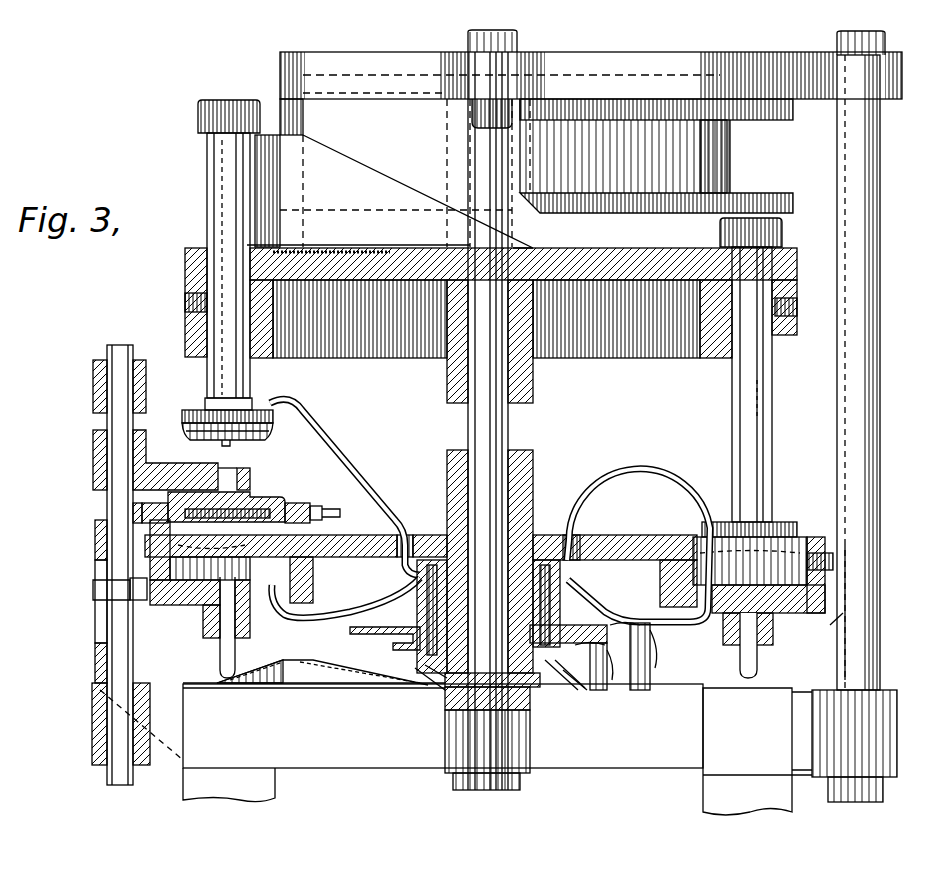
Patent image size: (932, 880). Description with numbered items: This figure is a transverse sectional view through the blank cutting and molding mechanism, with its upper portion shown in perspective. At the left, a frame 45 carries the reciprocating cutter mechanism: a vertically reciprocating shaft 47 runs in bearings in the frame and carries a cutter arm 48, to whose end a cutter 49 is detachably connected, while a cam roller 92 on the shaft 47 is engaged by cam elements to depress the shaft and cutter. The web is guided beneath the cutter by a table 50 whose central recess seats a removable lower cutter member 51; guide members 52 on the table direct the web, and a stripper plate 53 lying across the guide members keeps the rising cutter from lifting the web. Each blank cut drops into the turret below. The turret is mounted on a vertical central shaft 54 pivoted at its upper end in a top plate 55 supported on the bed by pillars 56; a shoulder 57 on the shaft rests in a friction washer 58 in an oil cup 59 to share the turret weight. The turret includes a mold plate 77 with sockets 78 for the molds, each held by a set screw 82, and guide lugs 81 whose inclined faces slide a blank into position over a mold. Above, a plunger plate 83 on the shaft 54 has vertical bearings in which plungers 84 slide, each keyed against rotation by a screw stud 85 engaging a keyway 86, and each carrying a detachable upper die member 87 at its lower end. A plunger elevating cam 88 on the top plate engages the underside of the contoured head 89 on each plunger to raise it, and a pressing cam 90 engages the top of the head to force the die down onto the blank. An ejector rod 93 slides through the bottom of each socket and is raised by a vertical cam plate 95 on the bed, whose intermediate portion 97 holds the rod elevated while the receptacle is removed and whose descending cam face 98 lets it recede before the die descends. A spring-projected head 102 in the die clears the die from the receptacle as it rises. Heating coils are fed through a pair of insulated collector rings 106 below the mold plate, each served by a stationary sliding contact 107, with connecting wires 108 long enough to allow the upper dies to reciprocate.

The frame 45 is at (95, 645).
The vertically reciprocating shaft 47 is at (119, 345).
The cutter arm 48 is at (158, 468).
The cutter 49 is at (266, 495).
The table 50 is at (332, 516).
The lower cutter member 51 is at (318, 510).
The guide members 52 is at (296, 505).
The stripper plate 53 is at (142, 510).
The vertical central shaft 54 is at (510, 424).
The top plate 55 is at (610, 62).
The pillars 56 is at (473, 110).
The shoulder 57 is at (445, 704).
The friction washer 58 is at (555, 685).
The oil cup 59 is at (580, 678).
The mold plate 77 is at (615, 533).
The sockets 78 is at (810, 540).
The guide lugs 81 is at (370, 545).
The set screw 82 is at (835, 560).
The plunger plate 83 is at (625, 290).
The vertical plungers 84 is at (215, 181).
The screw stud 85 is at (185, 302).
The keyway 86 is at (770, 400).
The upper die member 87 is at (190, 412).
The plunger elevating cam 88 is at (278, 130).
The head 89 is at (208, 113).
The pressing cam 90 is at (750, 193).
The cam roller 92 is at (145, 600).
The ejector rod 93 is at (220, 655).
The vertical cam plate 95 is at (315, 686).
The intermediate portion 97 is at (315, 660).
The descending cam face 98 is at (248, 683).
The head 102 is at (230, 446).
The collector rings 106 is at (393, 643).
The stationary sliding contact 107 is at (660, 668).
The connecting wires 108 is at (340, 450).